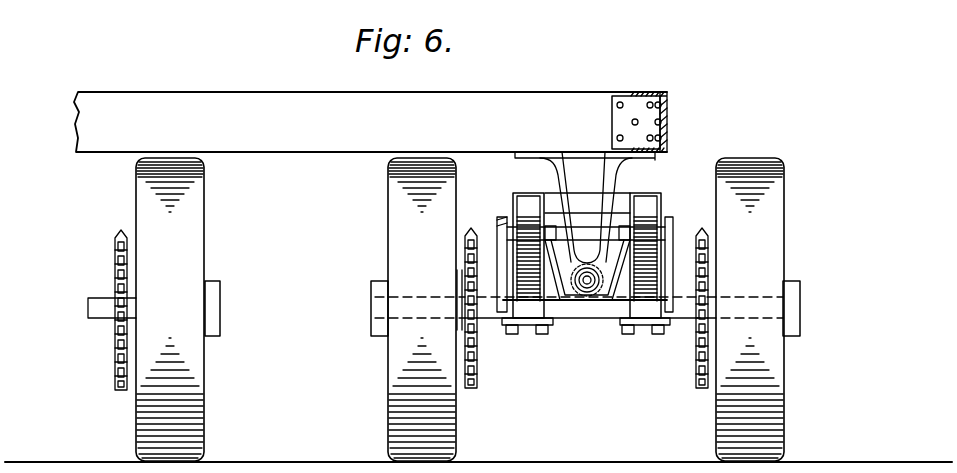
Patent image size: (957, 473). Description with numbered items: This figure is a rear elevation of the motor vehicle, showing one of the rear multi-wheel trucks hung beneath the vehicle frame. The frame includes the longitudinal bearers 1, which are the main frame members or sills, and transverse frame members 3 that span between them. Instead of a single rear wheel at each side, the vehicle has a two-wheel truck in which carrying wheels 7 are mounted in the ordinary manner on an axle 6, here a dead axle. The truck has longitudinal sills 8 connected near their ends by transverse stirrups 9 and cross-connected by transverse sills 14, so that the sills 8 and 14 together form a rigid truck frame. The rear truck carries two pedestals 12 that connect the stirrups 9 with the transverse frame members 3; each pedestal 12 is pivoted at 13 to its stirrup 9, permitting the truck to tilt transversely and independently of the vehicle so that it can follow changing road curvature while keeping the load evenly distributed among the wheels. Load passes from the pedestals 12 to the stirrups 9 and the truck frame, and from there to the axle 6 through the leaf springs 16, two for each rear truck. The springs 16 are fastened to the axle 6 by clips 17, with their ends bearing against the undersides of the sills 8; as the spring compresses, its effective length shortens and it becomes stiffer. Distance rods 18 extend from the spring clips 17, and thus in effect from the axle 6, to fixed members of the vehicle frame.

The longitudinal bearer 1 is at (668, 120).
The transverse frame member 3 is at (566, 100).
The axle 6 is at (95, 297).
The carrying wheel 7 is at (190, 245).
The longitudinal sill 8 is at (520, 200).
The transverse stirrup 9 is at (570, 303).
The pedestal 12 is at (612, 184).
The pivot 13 is at (589, 292).
The transverse sill 14 is at (552, 203).
The spring 16 is at (523, 300).
The clip 17 is at (627, 300).
The distance rod 18 is at (500, 240).